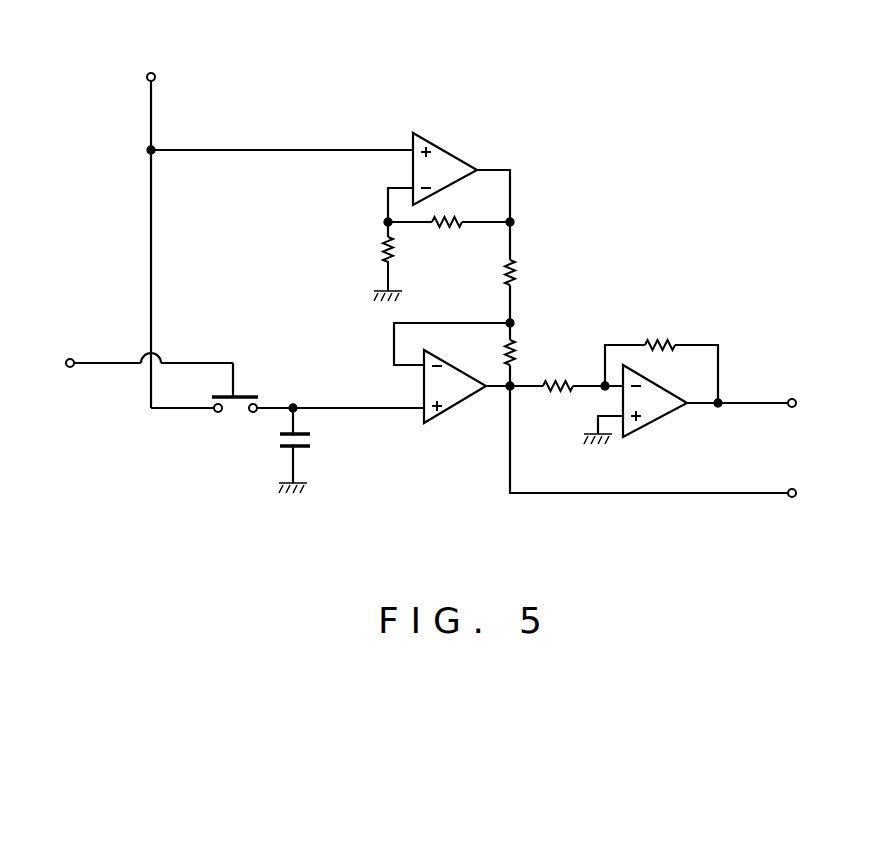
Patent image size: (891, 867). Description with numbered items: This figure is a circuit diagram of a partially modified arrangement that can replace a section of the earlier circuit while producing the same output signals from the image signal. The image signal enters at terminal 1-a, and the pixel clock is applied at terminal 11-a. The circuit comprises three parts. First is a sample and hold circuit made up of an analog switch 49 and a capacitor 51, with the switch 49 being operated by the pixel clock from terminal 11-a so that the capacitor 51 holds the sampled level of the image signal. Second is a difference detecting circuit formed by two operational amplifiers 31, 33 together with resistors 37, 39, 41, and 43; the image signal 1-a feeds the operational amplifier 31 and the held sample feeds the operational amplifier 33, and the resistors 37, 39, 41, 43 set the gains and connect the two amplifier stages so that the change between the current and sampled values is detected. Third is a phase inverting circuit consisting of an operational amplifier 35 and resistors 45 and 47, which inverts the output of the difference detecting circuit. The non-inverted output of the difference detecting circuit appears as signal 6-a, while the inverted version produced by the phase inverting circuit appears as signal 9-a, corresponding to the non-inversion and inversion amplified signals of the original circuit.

The input terminal 1-a is at (151, 72).
The pixel clock terminal 11-a is at (70, 368).
The non-inversion amplified signal 6-a is at (792, 398).
The inversion amplified signal 9-a is at (792, 498).
The operational amplifier 31 is at (447, 151).
The operational amplifier 33 is at (457, 405).
The operational amplifier 35 is at (663, 421).
The resistor 37 is at (382, 252).
The resistor 39 is at (444, 229).
The resistor 41 is at (521, 271).
The resistor 43 is at (521, 352).
The resistor 45 is at (553, 392).
The resistor 47 is at (660, 341).
The analog switch 49 is at (262, 400).
The capacitor 51 is at (312, 440).